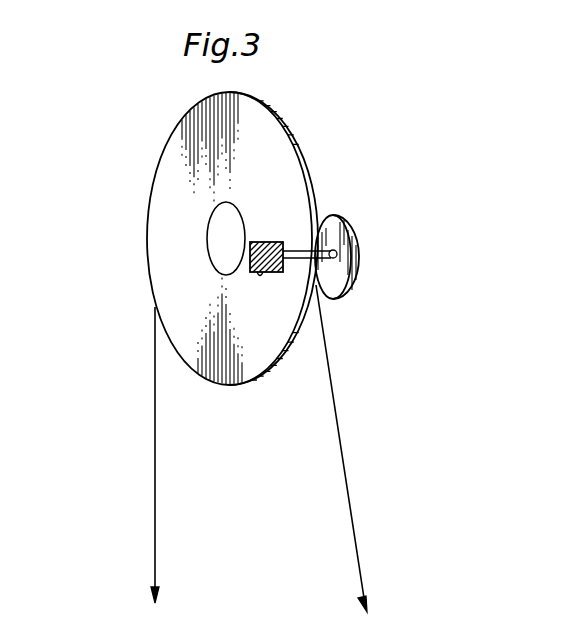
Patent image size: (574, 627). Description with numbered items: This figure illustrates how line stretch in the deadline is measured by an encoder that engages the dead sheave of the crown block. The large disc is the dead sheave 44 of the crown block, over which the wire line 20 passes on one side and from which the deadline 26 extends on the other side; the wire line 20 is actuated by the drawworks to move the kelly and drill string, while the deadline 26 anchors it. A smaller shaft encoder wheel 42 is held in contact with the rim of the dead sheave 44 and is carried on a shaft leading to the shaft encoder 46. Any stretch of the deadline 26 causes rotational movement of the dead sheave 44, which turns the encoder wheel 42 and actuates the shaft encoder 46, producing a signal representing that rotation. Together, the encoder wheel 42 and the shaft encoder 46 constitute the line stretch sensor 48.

The wire line 20 is at (155, 468).
The deadline 26 is at (352, 508).
The shaft encoder wheel 42 is at (365, 250).
The dead sheave 44 is at (250, 92).
The shaft encoder 46 is at (263, 242).
The line stretch sensor 48 is at (390, 294).